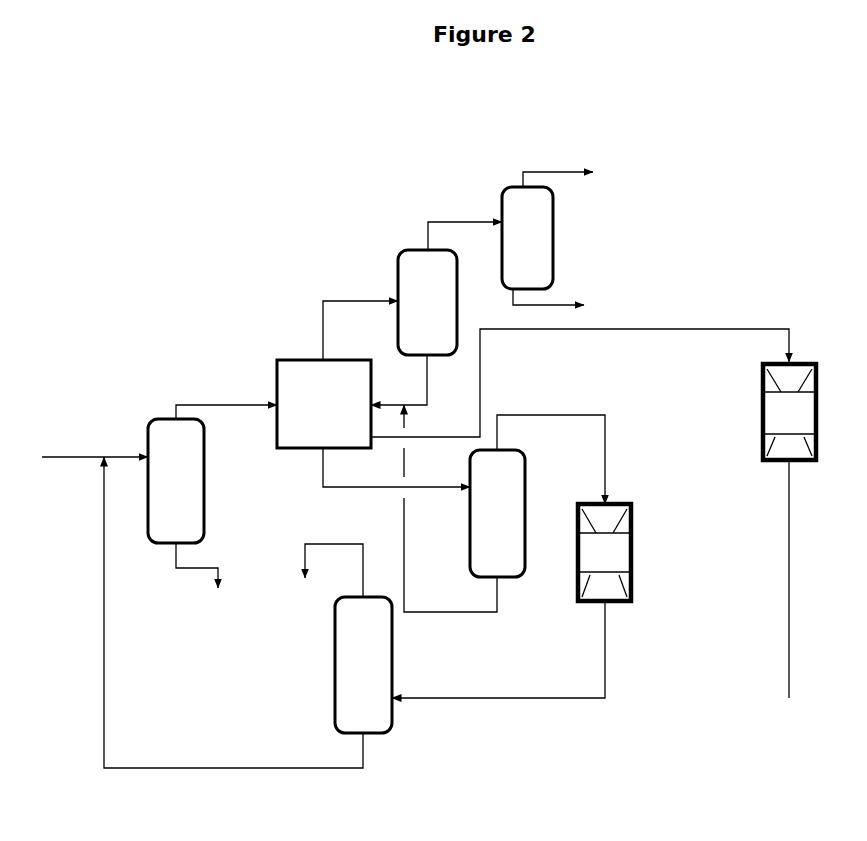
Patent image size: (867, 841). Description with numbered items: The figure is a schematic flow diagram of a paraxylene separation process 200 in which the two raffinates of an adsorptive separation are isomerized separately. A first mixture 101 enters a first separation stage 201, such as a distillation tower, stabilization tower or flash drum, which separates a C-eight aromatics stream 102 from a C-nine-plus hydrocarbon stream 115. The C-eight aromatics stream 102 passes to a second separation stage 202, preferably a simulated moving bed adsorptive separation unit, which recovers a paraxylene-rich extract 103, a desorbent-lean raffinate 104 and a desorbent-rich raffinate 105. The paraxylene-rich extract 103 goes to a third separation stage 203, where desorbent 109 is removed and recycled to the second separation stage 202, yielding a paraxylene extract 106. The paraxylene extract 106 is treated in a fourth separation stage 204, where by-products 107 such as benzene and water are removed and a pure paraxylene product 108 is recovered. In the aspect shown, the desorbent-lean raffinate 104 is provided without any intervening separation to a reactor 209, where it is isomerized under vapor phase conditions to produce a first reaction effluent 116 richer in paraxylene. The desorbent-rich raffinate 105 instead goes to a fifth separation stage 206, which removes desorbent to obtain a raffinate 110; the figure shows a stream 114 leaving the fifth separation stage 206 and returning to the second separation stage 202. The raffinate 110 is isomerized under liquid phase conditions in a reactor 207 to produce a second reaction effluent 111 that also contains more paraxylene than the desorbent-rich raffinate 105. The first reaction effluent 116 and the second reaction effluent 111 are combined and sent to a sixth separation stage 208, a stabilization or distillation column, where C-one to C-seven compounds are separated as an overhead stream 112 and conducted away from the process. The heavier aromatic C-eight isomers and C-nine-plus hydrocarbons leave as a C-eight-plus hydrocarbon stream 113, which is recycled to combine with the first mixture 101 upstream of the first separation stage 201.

The process 200 is at (628, 746).
The first separation stage 201 is at (155, 501).
The second separation stage 202 is at (303, 416).
The third separation stage 203 is at (406, 306).
The fourth separation stage 204 is at (506, 249).
The fifth separation stage 206 is at (476, 523).
The reactor 207 is at (584, 565).
The sixth separation stage 208 is at (342, 674).
The reactor 209 is at (769, 428).
The first mixture 101 is at (95, 440).
The C8 aromatics stream 102 is at (226, 400).
The paraxylene-rich extract 103 is at (360, 318).
The desorbent-lean raffinate 104 is at (580, 371).
The desorbent-rich raffinate 105 is at (396, 467).
The paraxylene extract 106 is at (465, 220).
The by-products 107 is at (580, 174).
The pure paraxylene product 108 is at (570, 303).
The desorbent 109 is at (420, 380).
The raffinate 110 is at (573, 459).
The second reaction effluent 111 is at (519, 649).
The overhead stream 112 is at (326, 578).
The C8+ hydrocarbon stream 113 is at (233, 612).
The recycle stream from unit 206 to reactor 114 is at (450, 508).
The C9+ hydrocarbon stream 115 is at (206, 581).
The first reaction effluent 116 is at (812, 579).